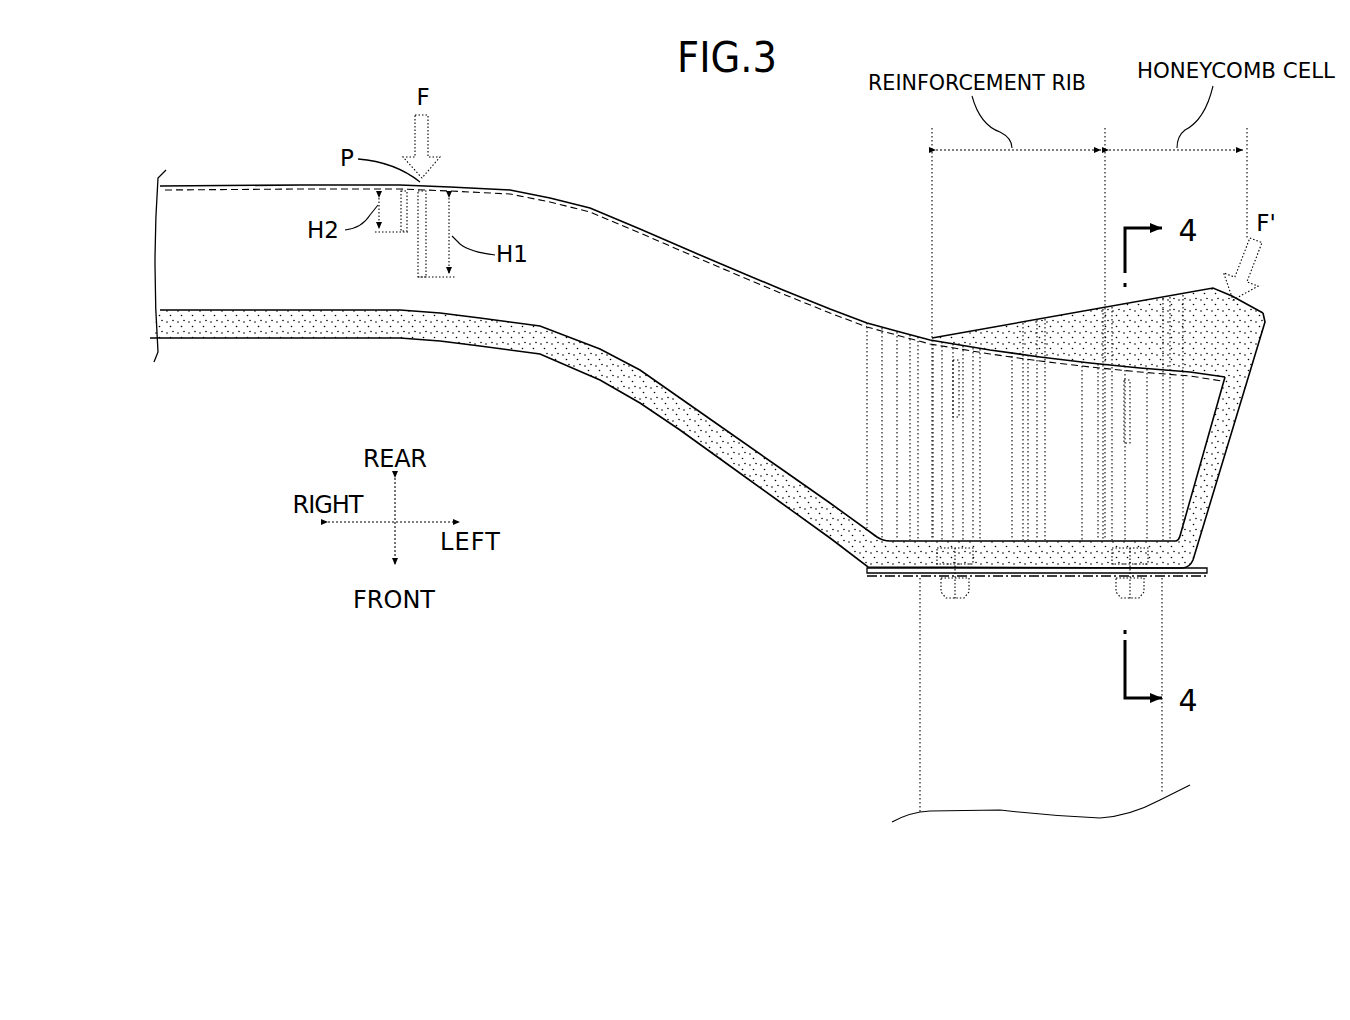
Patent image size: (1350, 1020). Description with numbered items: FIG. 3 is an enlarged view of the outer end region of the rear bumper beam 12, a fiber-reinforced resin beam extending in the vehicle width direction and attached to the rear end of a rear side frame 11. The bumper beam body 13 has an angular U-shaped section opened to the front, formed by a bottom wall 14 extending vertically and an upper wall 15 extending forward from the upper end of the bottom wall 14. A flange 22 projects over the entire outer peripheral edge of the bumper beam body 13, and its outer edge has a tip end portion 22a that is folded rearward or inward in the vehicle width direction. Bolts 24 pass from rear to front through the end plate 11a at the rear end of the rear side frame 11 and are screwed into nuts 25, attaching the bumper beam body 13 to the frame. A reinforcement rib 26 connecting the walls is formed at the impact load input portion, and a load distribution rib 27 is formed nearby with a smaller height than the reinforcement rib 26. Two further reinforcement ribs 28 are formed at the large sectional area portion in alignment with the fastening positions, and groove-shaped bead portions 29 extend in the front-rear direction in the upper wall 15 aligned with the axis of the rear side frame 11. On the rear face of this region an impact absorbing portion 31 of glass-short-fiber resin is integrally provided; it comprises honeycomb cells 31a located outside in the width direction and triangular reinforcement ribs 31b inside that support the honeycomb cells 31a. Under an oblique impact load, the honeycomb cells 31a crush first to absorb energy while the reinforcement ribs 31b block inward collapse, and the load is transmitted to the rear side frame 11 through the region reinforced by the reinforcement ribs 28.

The rear side frame 11 is at (912, 728).
The end plate 11a is at (893, 577).
The rear bumper beam 12 is at (252, 372).
The bumper beam body 13 is at (590, 380).
The bottom wall 14 is at (500, 346).
The upper wall 15 is at (591, 235).
The flange 22 is at (678, 395).
The tip end portion 22a is at (723, 428).
The bolt 24 is at (950, 600).
The nut 25 is at (1120, 590).
The reinforcement rib 26 is at (417, 249).
The load distribution rib 27 is at (396, 232).
The reinforcement rib 28 is at (965, 382).
The groove-shaped bead portion 29 is at (990, 362).
The impact absorbing portion 31 is at (990, 220).
The honeycomb cell 31a is at (1133, 320).
The reinforcement rib 31b is at (1032, 322).